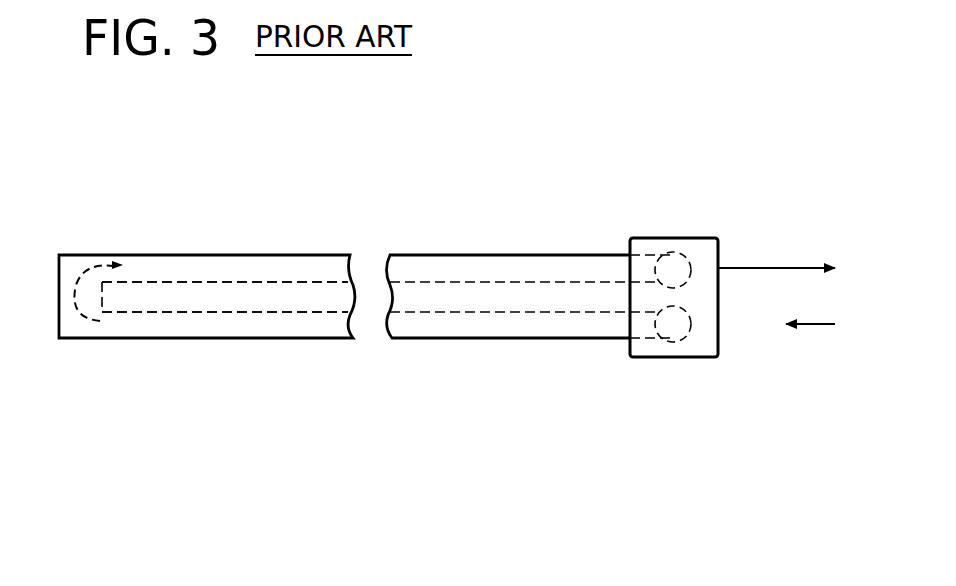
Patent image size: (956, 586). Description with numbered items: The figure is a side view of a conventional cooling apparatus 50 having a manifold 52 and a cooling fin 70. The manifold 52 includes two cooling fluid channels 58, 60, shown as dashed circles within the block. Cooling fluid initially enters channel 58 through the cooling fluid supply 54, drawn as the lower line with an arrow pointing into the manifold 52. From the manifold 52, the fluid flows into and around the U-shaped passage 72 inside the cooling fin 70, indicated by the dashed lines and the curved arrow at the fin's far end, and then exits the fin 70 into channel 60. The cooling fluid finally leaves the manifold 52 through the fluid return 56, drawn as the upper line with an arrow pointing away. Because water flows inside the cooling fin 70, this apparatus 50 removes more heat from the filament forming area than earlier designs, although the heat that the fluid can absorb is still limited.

The cooling apparatus 50 is at (490, 190).
The manifold 52 is at (641, 234).
The cooling fluid supply 54 is at (753, 330).
The fluid return 56 is at (758, 268).
The cooling fluid channel 58 is at (680, 342).
The cooling fluid channel 60 is at (674, 252).
The cooling fin 70 is at (249, 253).
The U-shaped passage 72 is at (283, 316).